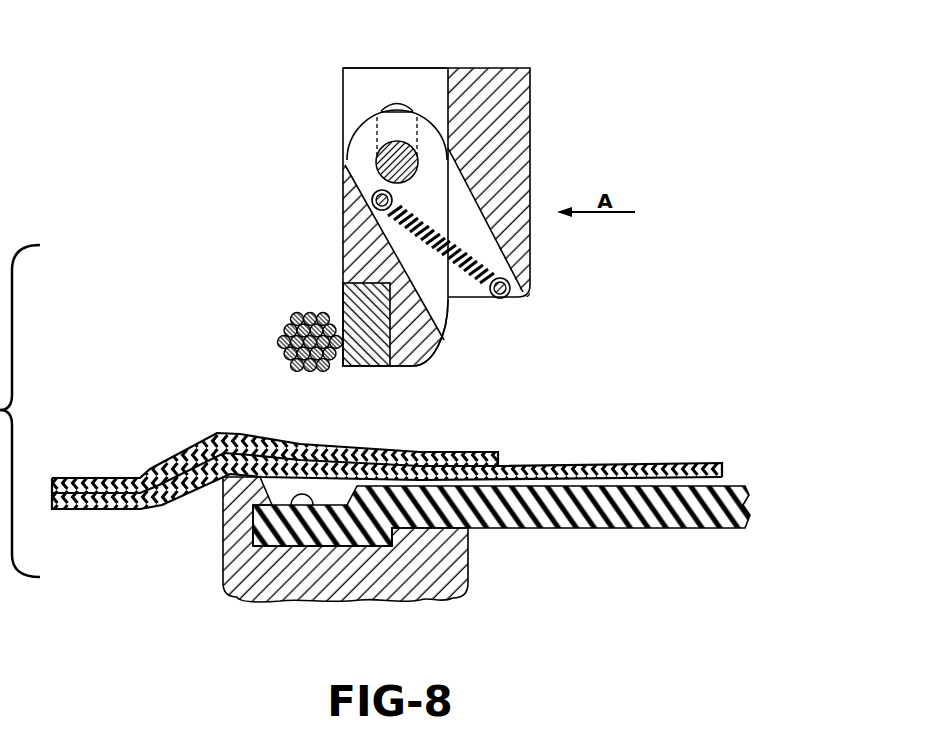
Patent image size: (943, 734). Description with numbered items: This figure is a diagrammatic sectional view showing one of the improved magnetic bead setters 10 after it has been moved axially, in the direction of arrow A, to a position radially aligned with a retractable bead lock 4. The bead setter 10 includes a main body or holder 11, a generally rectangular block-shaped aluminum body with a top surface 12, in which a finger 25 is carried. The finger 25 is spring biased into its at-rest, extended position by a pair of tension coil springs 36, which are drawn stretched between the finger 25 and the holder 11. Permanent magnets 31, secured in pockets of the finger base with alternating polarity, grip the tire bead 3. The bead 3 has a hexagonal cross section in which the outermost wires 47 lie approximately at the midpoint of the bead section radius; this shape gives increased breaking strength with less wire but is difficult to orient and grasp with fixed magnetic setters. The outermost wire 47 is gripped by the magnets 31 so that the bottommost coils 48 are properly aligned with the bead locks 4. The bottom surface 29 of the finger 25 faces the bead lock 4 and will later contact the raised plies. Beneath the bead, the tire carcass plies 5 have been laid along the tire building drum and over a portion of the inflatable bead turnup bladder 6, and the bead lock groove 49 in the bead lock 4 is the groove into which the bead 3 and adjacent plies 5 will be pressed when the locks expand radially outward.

The tire bead 3 is at (278, 354).
The bead lock segments 4 is at (457, 578).
The plies 5 is at (118, 514).
The bead turnup bladder 6 is at (521, 568).
The bead setter 10 is at (534, 135).
The main body or holder 11 is at (411, 66).
The top surface 12 is at (378, 68).
The finger 25 is at (338, 206).
The bottom surface 29 is at (395, 368).
The permanent magnets 31 is at (348, 297).
The tension coil springs 36 is at (405, 224).
The outermost wires 47 is at (368, 367).
The bottommost coils 48 is at (310, 372).
The bead lock groove 49 is at (272, 532).